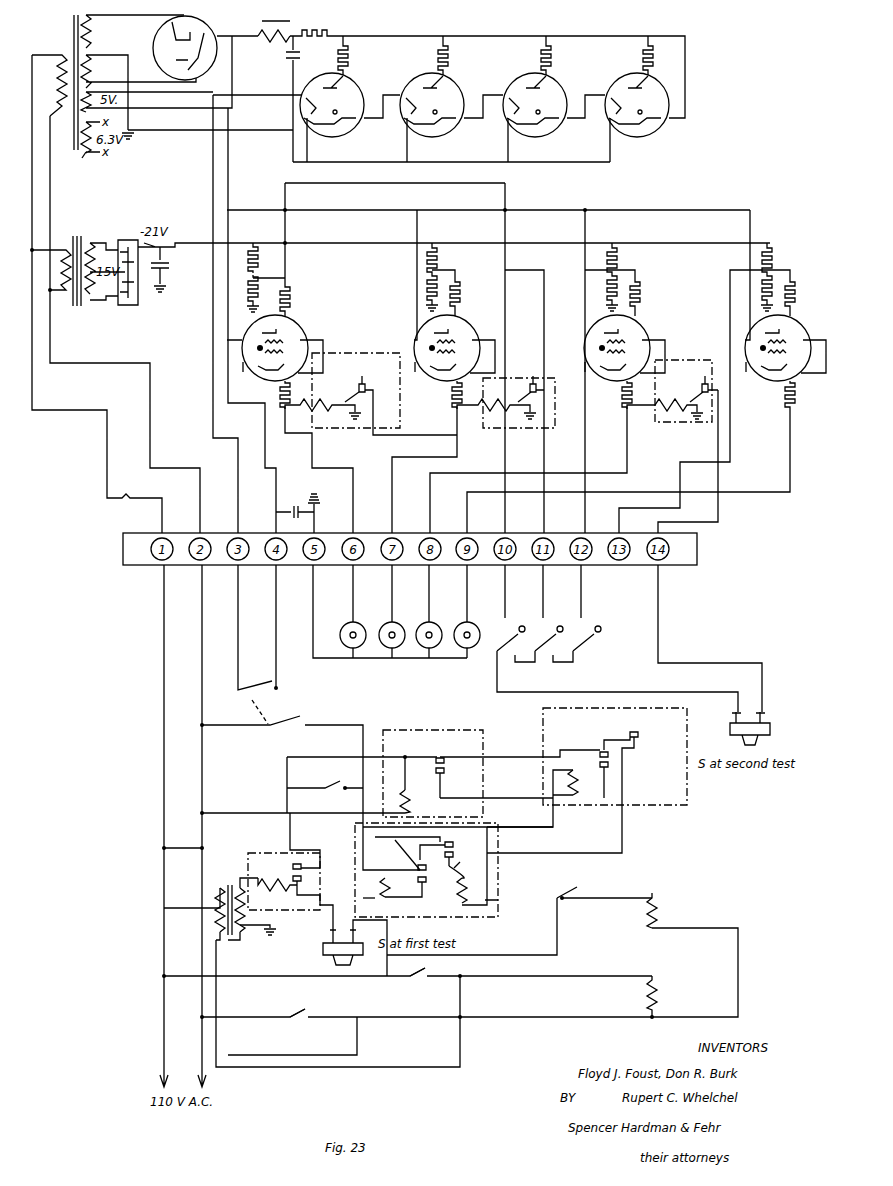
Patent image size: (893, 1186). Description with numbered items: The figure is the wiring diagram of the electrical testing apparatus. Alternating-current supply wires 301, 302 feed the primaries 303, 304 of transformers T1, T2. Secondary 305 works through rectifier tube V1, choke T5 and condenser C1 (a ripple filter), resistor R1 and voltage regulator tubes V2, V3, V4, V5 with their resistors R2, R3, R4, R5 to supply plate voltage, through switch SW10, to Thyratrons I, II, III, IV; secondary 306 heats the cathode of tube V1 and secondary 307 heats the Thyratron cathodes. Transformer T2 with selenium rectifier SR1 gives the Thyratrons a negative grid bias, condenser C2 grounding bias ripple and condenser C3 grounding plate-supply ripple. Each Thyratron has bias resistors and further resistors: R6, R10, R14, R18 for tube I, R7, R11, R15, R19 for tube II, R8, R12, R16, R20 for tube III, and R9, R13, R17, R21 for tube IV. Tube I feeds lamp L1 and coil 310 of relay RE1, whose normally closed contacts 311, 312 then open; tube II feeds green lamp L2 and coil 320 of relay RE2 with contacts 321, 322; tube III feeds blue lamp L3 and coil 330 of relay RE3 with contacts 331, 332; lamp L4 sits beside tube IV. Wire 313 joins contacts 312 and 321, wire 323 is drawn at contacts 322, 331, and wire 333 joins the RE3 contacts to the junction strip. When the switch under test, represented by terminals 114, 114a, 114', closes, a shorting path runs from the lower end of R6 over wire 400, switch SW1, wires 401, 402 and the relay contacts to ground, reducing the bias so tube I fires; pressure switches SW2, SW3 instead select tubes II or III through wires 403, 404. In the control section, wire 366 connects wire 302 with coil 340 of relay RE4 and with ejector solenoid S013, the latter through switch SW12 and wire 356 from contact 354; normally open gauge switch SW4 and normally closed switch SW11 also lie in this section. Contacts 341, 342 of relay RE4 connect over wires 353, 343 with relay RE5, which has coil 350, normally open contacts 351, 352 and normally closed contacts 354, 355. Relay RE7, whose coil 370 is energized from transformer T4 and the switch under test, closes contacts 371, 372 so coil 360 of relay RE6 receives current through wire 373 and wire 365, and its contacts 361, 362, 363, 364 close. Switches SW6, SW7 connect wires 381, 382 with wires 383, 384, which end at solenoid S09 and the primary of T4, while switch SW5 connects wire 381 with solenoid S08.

The power transformer T1 is at (59, 82).
The primary winding 303 is at (49, 85).
The high voltage secondary winding 305 is at (132, 31).
The secondary winding 306 is at (138, 92).
The filament winding 307 is at (97, 163).
The rectifier tube V1 is at (205, 42).
The choke T5 is at (274, 23).
The filter capacitor C1 is at (280, 99).
The resistor R1 is at (487, 61).
The resistor R2 is at (355, 55).
The resistor R3 is at (455, 55).
The resistor R4 is at (558, 55).
The resistor R5 is at (660, 55).
The voltage regulator tube V2 is at (335, 99).
The voltage regulator tube V3 is at (435, 99).
The voltage regulator tube V4 is at (538, 99).
The voltage regulator tube V5 is at (640, 99).
The bias transformer T2 is at (73, 282).
The primary winding 304 is at (55, 255).
The selenium rectifier SR1 is at (133, 282).
The capacitor C2 is at (170, 269).
The supply line 400 is at (395, 191).
The resistor R6 is at (263, 258).
The resistor R10 is at (266, 293).
The plate resistor R14 is at (287, 297).
The thyratron tube I is at (275, 350).
The cathode resistor R18 is at (300, 395).
The relay coil 310 is at (323, 413).
The relay armature 311 is at (343, 390).
The relay contact 312 is at (381, 381).
The relay RE1 is at (356, 378).
The line 313 is at (411, 420).
The resistor R7 is at (447, 258).
The resistor R11 is at (419, 292).
The plate resistor R15 is at (462, 293).
The thyratron tube II is at (453, 350).
The cathode resistor R19 is at (445, 395).
The relay coil 320 is at (496, 413).
The relay armature 321 is at (504, 392).
The relay contact 322 is at (552, 382).
The relay RE2 is at (519, 394).
The line 403 is at (542, 401).
The resistor R8 is at (626, 258).
The resistor R12 is at (604, 292).
The plate resistor R16 is at (628, 293).
The thyratron tube III is at (623, 350).
The cathode resistor R20 is at (643, 395).
The relay coil 330 is at (665, 413).
The relay armature 331 is at (699, 383).
The relay contact 332 is at (720, 380).
The relay RE3 is at (684, 373).
The line 323 is at (557, 471).
The line 404 is at (676, 401).
The resistor R9 is at (781, 258).
The resistor R13 is at (757, 292).
The plate resistor R17 is at (797, 293).
The thyratron tube IV is at (784, 350).
The cathode resistor R21 is at (806, 395).
The line 333 is at (628, 461).
The capacitor C3 is at (298, 509).
The indicator lamp L1 is at (349, 611).
The indicator lamp L2 is at (388, 611).
The indicator lamp L3 is at (425, 611).
The indicator lamp L4 is at (463, 611).
The switch SW1 is at (493, 622).
The switch SW2 is at (539, 624).
The switch SW3 is at (577, 624).
The line 401 is at (617, 687).
The line 402 is at (728, 638).
The socket terminal 114a is at (723, 718).
The socket terminal 114' is at (771, 727).
The switch SW10 is at (284, 627).
The switch SW11 is at (281, 756).
The switch SW4 is at (325, 785).
The line 366 is at (357, 854).
The line 365 is at (291, 841).
The line 353 is at (445, 804).
The relay RE4 is at (423, 760).
The relay contact 341 is at (455, 760).
The relay contact 342 is at (455, 782).
The relay coil 340 is at (386, 801).
The line 343 is at (506, 798).
The relay RE5 is at (644, 756).
The relay coil 350 is at (579, 782).
The relay contact 351 is at (594, 749).
The relay contact 352 is at (625, 778).
The relay contact 354 is at (633, 730).
The relay contact 355 is at (648, 745).
The line 356 is at (554, 805).
The relay RE6 is at (454, 860).
The relay contact 362 is at (411, 861).
The relay contact 361 is at (419, 887).
The relay coil 360 is at (397, 887).
The relay contact 364 is at (447, 843).
The relay contact 363 is at (466, 852).
The switch SW12 is at (490, 872).
The solenoid S013 is at (461, 900).
The line 373 is at (379, 907).
The relay RE7 is at (265, 881).
The relay contact 372 is at (302, 859).
The relay contact 371 is at (306, 890).
The relay coil 370 is at (275, 872).
The transformer T4 is at (236, 915).
The line 383 is at (404, 989).
The line 384 is at (469, 972).
The socket 114 is at (343, 935).
The line 381 is at (475, 926).
The switch SW5 is at (604, 889).
The solenoid S08 is at (669, 910).
The solenoid S09 is at (670, 996).
The switch SW6 is at (411, 982).
The line 382 is at (292, 1025).
The switch SW7 is at (288, 1024).
The power lead 301 is at (151, 826).
The power lead 302 is at (193, 826).